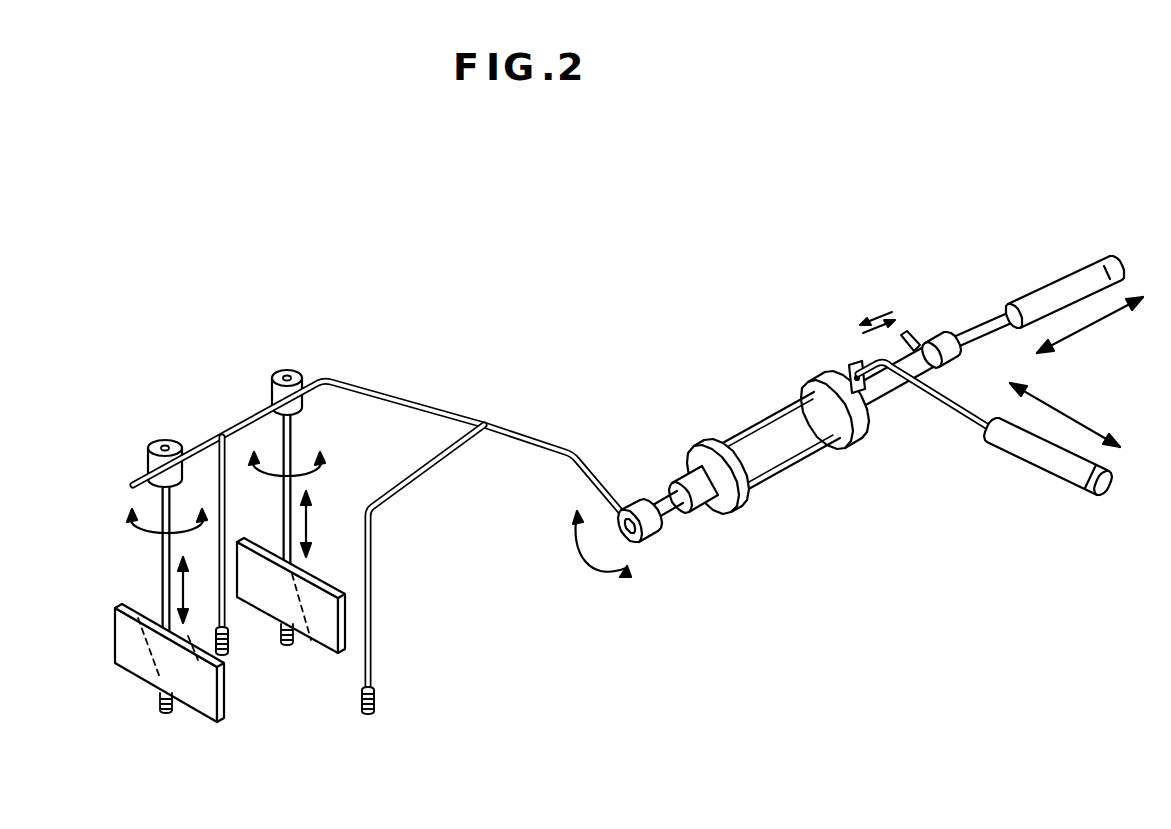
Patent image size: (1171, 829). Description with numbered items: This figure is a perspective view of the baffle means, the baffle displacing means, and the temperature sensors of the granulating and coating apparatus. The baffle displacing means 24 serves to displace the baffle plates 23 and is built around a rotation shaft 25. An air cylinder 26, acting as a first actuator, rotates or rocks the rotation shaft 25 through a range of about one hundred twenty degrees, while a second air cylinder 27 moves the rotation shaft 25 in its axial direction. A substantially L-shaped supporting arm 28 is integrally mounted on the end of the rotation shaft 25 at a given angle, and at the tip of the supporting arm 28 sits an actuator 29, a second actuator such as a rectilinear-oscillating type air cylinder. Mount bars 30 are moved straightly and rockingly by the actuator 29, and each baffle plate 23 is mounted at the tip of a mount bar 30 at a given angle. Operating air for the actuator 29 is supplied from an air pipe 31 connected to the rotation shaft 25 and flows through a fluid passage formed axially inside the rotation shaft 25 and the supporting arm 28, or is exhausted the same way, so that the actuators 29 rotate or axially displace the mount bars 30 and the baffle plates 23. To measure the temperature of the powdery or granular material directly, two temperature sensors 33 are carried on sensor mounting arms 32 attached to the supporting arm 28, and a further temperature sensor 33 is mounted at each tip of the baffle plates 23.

The baffle plate 23 is at (124, 667).
The baffle displacing means 24 is at (722, 428).
The rotation shaft 25 is at (672, 516).
The air cylinder 26 is at (1034, 466).
The air cylinder 27 is at (1062, 272).
The supporting arm 28 is at (427, 406).
The actuator 29 is at (158, 443).
The mount bar 30 is at (296, 438).
The air pipe 31 is at (917, 340).
The sensor mounting arm 32 is at (234, 437).
The temperature sensor 33 is at (284, 648).